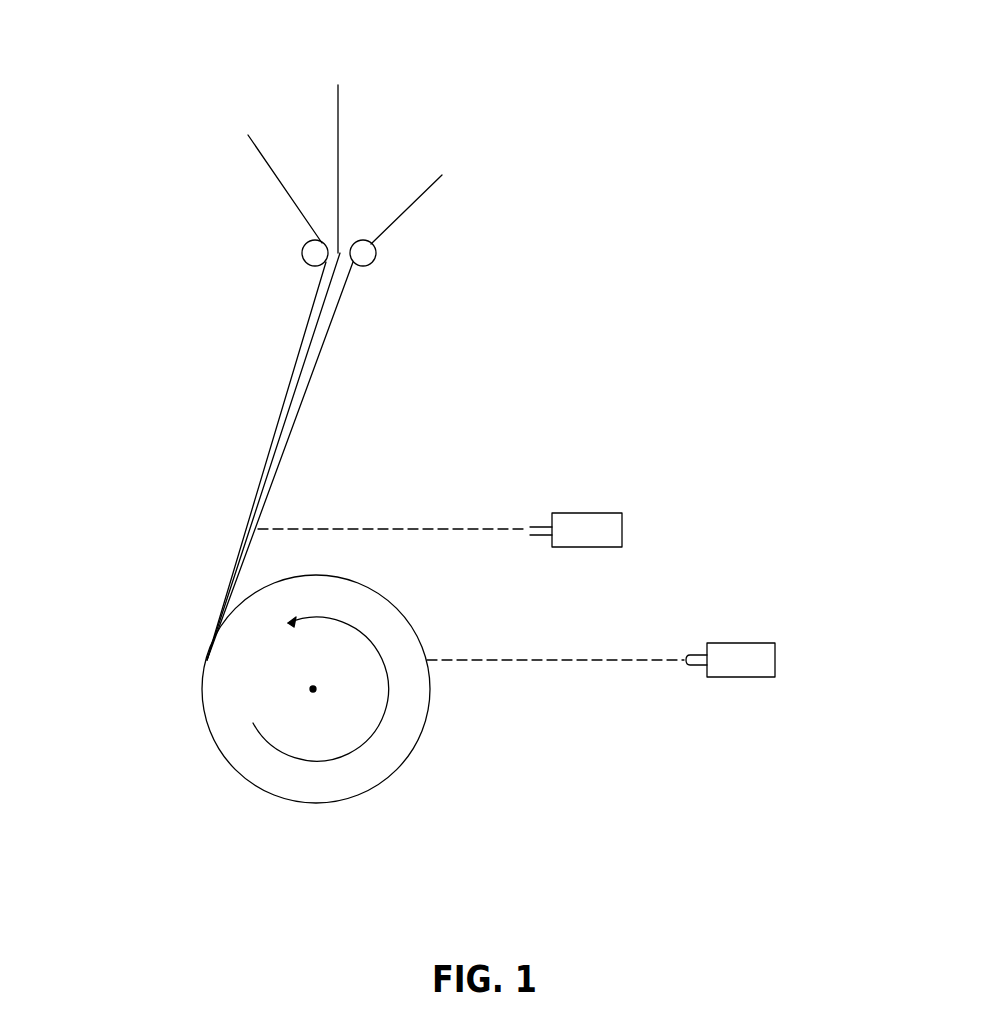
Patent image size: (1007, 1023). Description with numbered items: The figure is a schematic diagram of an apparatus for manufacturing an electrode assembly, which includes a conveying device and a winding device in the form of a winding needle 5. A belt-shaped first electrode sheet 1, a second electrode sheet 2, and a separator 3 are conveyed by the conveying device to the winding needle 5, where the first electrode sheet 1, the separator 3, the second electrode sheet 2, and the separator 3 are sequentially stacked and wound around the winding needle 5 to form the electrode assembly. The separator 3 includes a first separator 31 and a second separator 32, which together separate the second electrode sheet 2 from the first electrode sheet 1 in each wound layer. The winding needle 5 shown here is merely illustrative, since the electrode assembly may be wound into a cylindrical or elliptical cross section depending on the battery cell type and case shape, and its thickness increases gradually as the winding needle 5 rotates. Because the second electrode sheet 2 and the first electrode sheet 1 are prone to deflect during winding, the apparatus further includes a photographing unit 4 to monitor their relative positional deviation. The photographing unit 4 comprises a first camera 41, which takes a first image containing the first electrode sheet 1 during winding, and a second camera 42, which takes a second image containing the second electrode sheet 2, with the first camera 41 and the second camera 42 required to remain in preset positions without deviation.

The first electrode sheet 1 is at (385, 218).
The second electrode sheet 2 is at (252, 153).
The separator 3 is at (209, 149).
The first separator 31 is at (330, 138).
The second separator 32 is at (205, 173).
The photographing unit 4 is at (609, 595).
The first camera 41 is at (663, 525).
The second camera 42 is at (790, 665).
The winding needle 5 is at (407, 797).